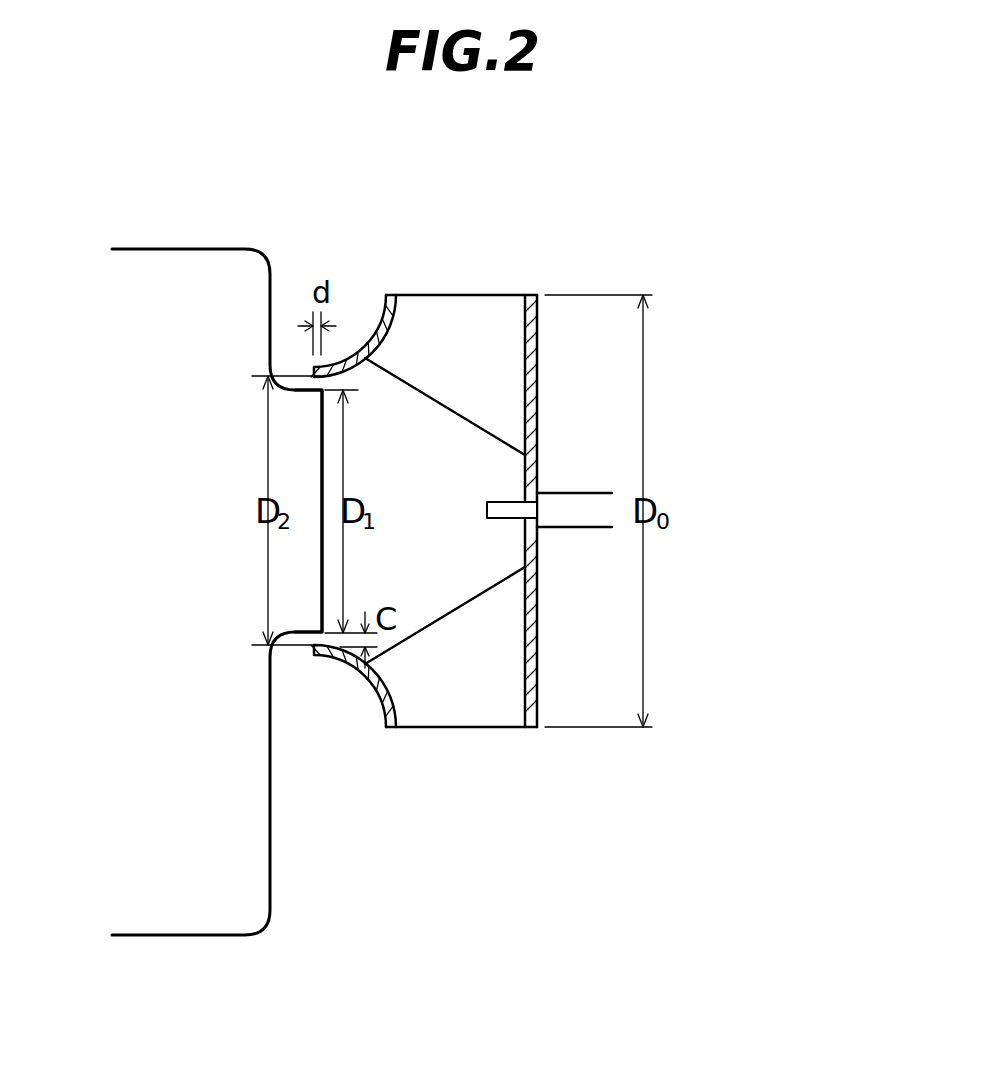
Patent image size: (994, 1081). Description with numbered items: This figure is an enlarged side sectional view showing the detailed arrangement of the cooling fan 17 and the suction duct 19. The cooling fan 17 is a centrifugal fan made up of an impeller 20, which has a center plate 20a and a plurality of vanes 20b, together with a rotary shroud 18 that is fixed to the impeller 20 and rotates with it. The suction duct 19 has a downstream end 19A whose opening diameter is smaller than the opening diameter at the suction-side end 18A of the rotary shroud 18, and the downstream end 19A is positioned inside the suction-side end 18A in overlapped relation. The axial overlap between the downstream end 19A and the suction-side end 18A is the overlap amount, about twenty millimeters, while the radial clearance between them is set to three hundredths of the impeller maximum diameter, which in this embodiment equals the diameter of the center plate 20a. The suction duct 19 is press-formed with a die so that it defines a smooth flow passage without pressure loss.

The cooling fan 17 is at (608, 511).
The rotary shroud 18 is at (374, 318).
The suction-side end of the rotary shroud 18A is at (310, 648).
The suction duct 19 is at (190, 247).
The downstream end of the suction duct 19A is at (323, 636).
The impeller 20 is at (608, 511).
The center plate 20a is at (540, 335).
The vanes 20b is at (483, 383).